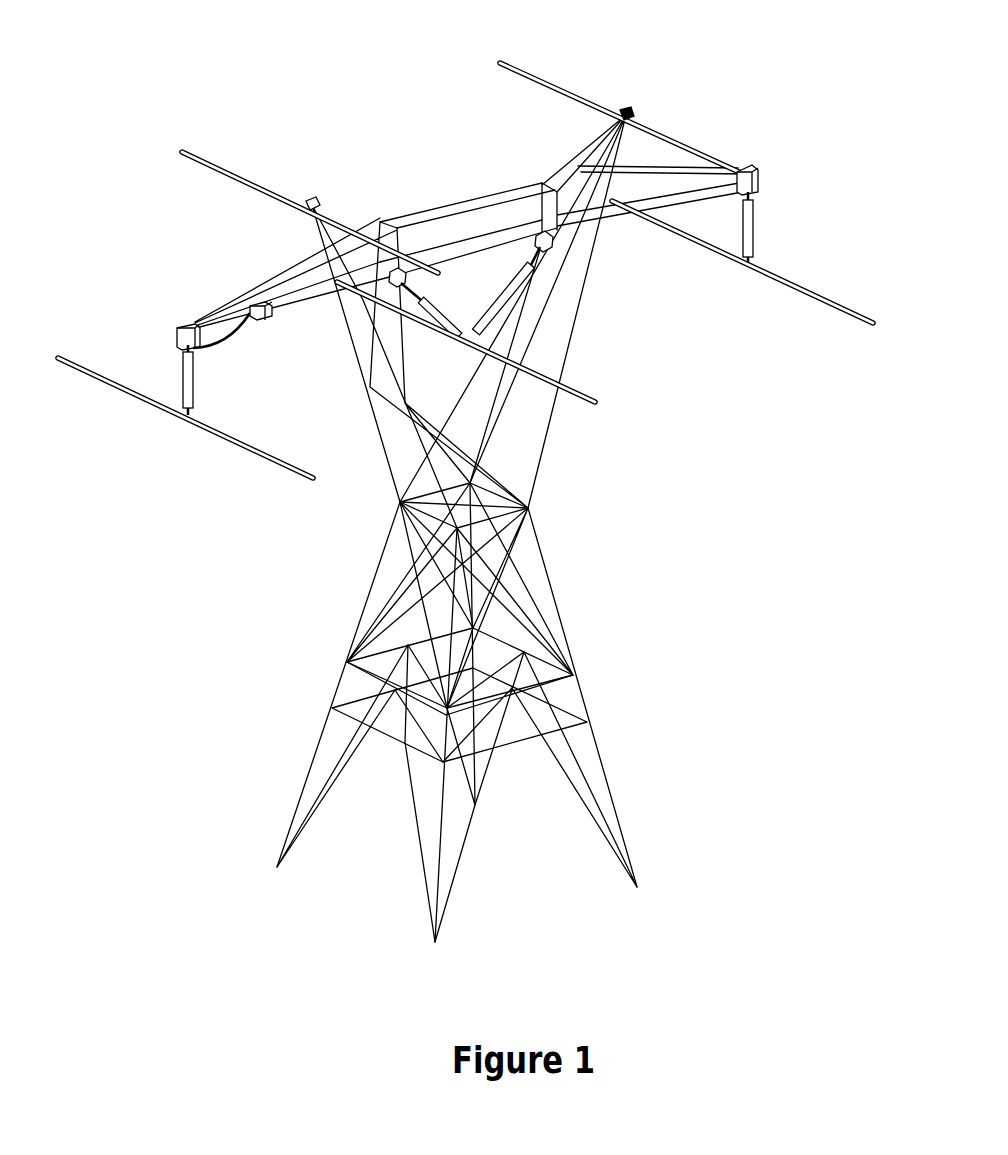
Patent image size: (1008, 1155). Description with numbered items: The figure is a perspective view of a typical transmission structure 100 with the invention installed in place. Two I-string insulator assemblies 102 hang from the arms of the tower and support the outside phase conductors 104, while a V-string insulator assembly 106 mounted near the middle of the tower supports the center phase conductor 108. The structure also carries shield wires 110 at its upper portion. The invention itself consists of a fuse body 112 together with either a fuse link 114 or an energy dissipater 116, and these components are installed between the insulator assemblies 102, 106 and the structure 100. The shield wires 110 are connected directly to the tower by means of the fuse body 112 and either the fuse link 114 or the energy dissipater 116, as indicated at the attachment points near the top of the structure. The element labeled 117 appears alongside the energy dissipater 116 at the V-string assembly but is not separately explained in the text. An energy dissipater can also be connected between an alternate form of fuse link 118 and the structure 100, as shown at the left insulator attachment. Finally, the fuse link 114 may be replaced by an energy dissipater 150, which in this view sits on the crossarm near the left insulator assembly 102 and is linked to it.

The transmission structure 100 is at (477, 203).
The I-string insulator assembly 102 is at (193, 383).
The outside phase conductor 104 is at (283, 477).
The V-string insulator assembly 106 is at (490, 315).
The center phase conductor 108 is at (422, 328).
The shield wire 110 is at (255, 197).
The fuse body 112 is at (180, 327).
The fuse link 114 is at (630, 110).
The energy dissipater 116 is at (404, 279).
The clamp 117 is at (550, 246).
The alternate form of fuse link 118 is at (180, 352).
The energy dissipater 150 is at (267, 320).